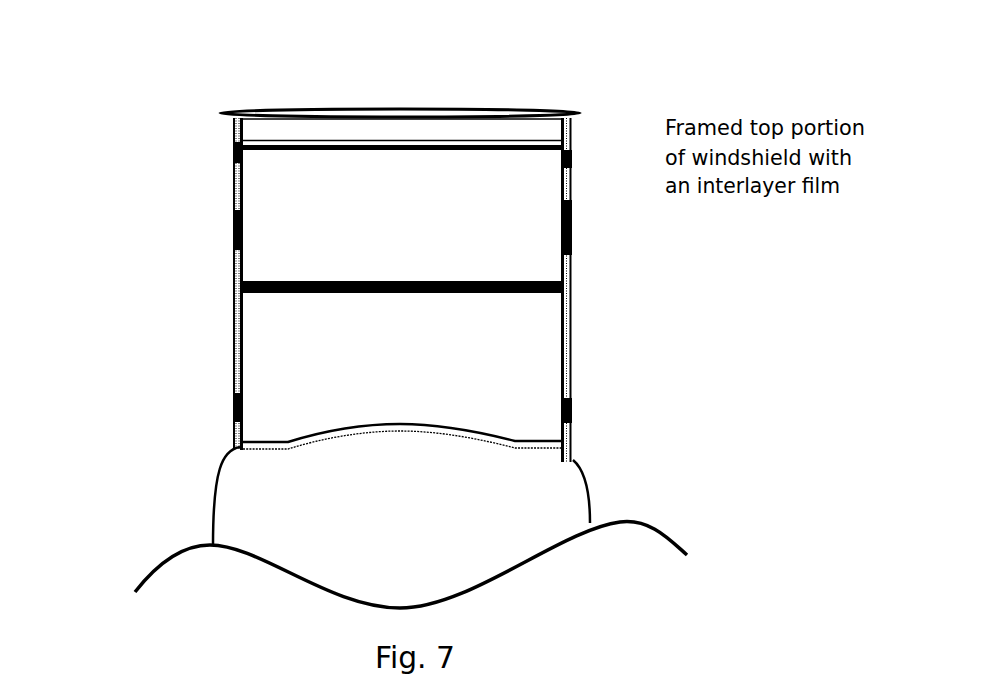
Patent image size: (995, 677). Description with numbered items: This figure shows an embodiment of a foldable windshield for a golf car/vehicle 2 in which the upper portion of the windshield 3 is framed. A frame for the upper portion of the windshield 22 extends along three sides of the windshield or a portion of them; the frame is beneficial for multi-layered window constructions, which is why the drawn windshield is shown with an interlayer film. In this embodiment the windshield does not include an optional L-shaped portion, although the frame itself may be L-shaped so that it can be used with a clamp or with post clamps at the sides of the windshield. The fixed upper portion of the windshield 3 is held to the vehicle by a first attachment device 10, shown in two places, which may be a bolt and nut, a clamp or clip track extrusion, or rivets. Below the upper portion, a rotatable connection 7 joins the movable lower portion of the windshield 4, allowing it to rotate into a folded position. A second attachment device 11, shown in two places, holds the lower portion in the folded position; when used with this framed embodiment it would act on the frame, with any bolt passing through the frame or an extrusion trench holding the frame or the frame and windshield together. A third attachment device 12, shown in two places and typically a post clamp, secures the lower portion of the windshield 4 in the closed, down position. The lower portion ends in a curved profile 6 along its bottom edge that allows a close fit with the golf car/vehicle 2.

The golf car/vehicle 2 is at (400, 73).
The upper portion of the windshield 3 is at (607, 290).
The lower portion of the windshield 4 is at (548, 356).
The curved profile along the lower portion of the windshield 6 is at (453, 455).
The rotatable connection 7 is at (465, 272).
The first attachment device 10 is at (297, 233).
The second attachment device 11 is at (297, 279).
The third attachment device 12 is at (297, 389).
The frame for upper portion of windshield 22 is at (371, 101).